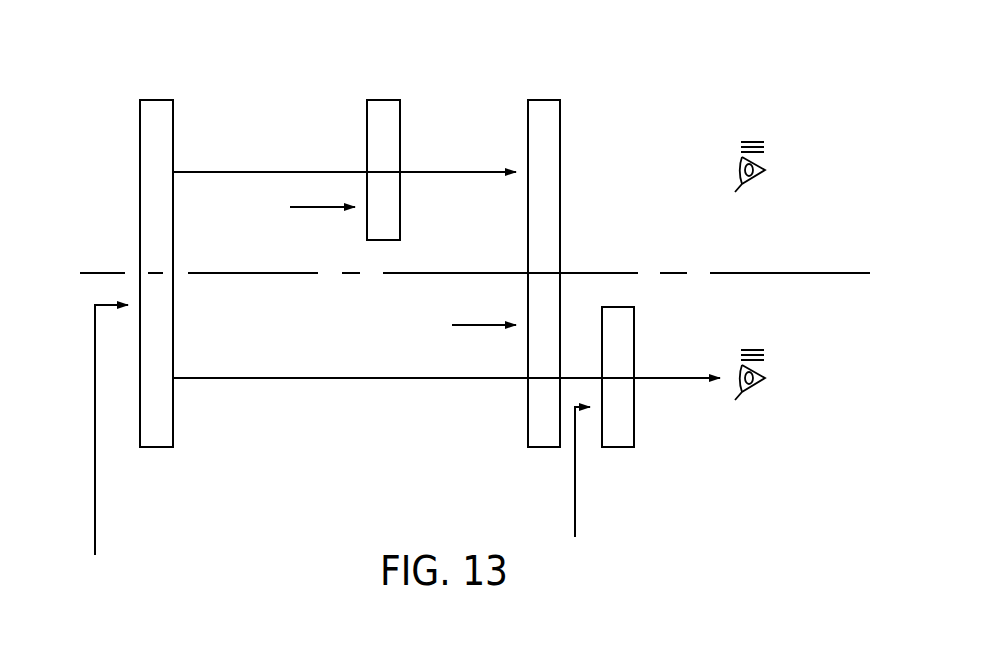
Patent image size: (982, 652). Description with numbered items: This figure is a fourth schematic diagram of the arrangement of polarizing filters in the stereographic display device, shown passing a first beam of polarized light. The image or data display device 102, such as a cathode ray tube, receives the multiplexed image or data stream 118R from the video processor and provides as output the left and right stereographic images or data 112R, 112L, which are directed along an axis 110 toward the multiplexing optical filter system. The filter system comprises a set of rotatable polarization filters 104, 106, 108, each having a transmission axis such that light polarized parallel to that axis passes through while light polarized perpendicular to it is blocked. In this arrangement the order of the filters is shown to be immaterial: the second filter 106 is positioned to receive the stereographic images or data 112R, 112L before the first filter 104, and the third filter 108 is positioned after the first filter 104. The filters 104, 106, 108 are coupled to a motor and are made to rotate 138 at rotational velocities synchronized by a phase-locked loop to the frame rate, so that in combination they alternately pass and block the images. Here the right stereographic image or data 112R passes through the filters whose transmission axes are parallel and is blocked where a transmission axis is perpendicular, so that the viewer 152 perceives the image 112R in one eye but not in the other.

The image or data display device 102 is at (150, 100).
The first filter 104 is at (545, 100).
The second filter 106 is at (380, 100).
The third filter 108 is at (613, 447).
The axis 110 is at (777, 273).
The right stereographic image or data 112R is at (316, 172).
The left stereographic image or data 112L is at (677, 380).
The right video processor output signal 118R is at (95, 505).
The rotation of the filters 138 is at (318, 208).
The viewer 152 is at (758, 404).